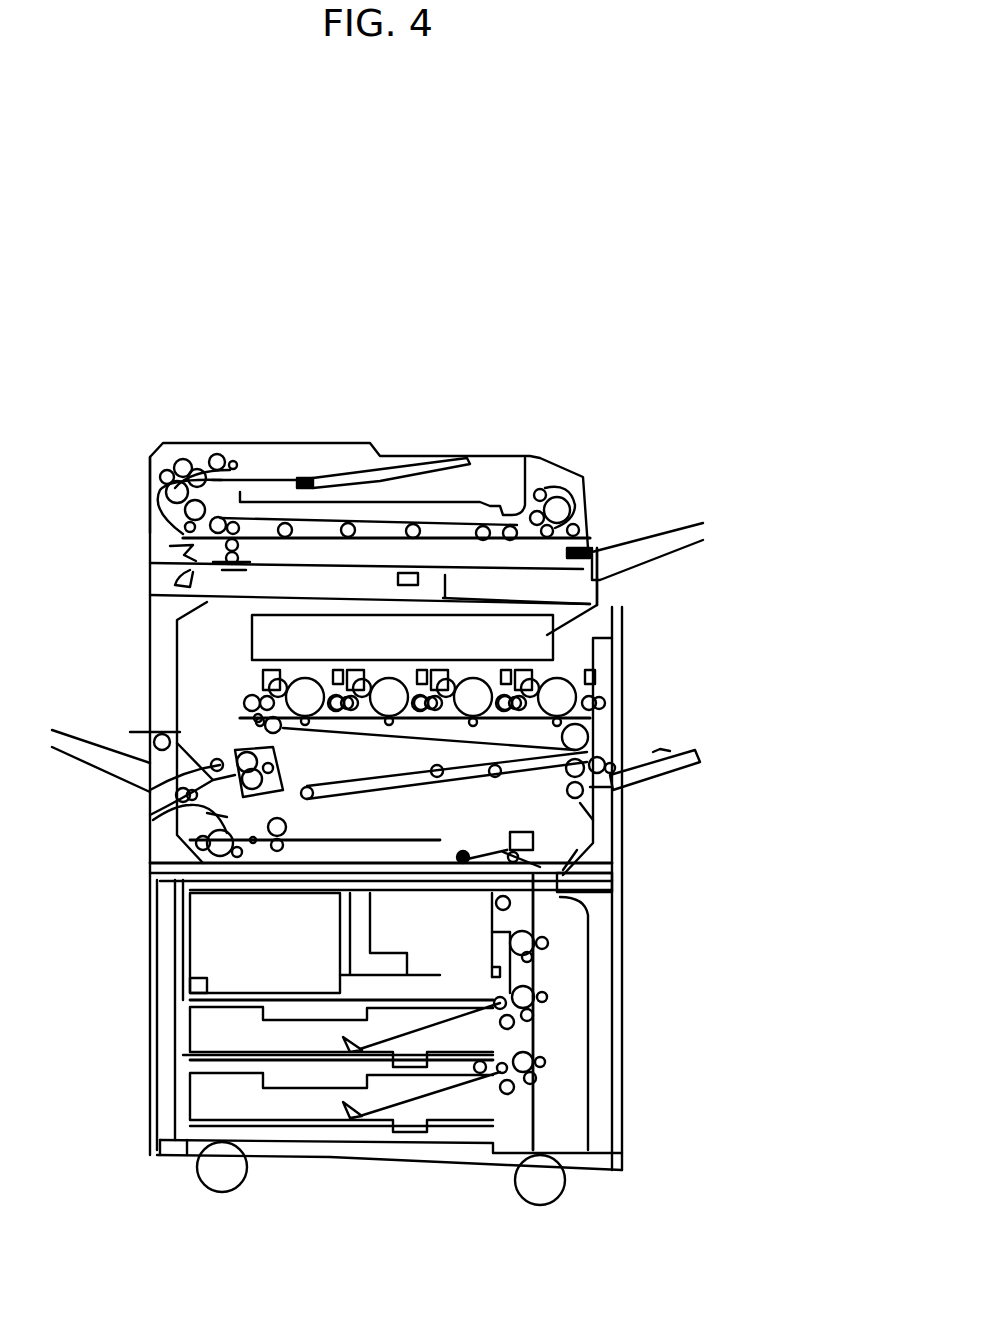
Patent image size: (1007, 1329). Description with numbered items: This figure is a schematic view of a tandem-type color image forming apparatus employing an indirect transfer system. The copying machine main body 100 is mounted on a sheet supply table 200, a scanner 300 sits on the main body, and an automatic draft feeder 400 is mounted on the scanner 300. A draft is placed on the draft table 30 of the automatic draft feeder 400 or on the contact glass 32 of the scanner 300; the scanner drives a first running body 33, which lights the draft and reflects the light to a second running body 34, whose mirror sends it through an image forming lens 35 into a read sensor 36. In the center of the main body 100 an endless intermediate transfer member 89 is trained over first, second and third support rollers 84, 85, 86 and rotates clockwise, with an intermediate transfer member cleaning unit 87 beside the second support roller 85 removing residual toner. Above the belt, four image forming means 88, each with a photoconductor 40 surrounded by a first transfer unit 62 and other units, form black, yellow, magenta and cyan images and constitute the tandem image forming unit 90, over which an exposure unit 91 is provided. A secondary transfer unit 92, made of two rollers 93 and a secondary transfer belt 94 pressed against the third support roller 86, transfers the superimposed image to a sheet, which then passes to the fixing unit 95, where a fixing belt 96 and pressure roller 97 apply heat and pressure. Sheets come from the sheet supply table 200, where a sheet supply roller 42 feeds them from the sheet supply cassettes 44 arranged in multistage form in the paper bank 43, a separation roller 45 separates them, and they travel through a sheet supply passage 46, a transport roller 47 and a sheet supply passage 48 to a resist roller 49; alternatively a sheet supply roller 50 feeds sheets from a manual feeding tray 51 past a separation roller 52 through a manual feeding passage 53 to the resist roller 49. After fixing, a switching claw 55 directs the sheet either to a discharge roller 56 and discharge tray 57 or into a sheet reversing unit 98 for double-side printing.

The automatic draft feeder 400 is at (145, 471).
The scanner 300 is at (143, 555).
The copying machine main body 100 is at (143, 653).
The sheet supply table 200 is at (143, 940).
The draft table 30 is at (339, 467).
The contact glass 32 is at (452, 522).
The first running body 33 is at (242, 572).
The second running body 34 is at (180, 568).
The image forming lens 35 is at (398, 578).
The read sensor 36 is at (447, 591).
The photoconductor 40 is at (298, 683).
The image forming means 88 is at (310, 672).
The tandem image forming unit 90 is at (257, 681).
The intermediate transfer member cleaning unit 87 is at (257, 720).
The fixing belt 96 is at (257, 740).
The discharge roller 56 is at (158, 734).
The discharge tray 57 is at (90, 755).
The switching claw 55 is at (150, 815).
The fixing unit 95 is at (153, 820).
The first transfer unit 62 is at (308, 725).
The first support roller 84 is at (582, 731).
The second support roller 85 is at (280, 733).
The intermediate transfer member 89 is at (378, 762).
The third support roller 86 is at (381, 786).
The secondary transfer unit 92 is at (493, 777).
The rollers 93 is at (437, 778).
The secondary transfer belt 94 is at (385, 795).
The pressure roller 97 is at (286, 826).
The exposure unit 91 is at (605, 603).
The sheet supply roller 50 is at (597, 758).
The manual feeding tray 51 is at (655, 777).
The separation roller 52 is at (593, 820).
The sheet supply passage 48 is at (610, 858).
The resist roller 49 is at (515, 832).
The manual feeding passage 53 is at (578, 848).
The sheet reversing unit 98 is at (388, 890).
The sheet supply roller 42 is at (474, 900).
The paper bank 43 is at (190, 1052).
The paper cassette tray 44 is at (190, 1015).
The separation roller 45 is at (500, 926).
The sheet supply passage 46 is at (545, 972).
The transport roller 47 is at (547, 888).